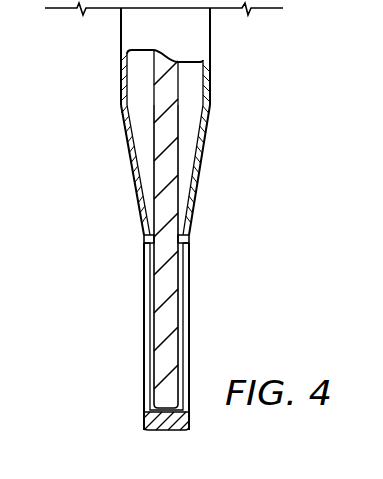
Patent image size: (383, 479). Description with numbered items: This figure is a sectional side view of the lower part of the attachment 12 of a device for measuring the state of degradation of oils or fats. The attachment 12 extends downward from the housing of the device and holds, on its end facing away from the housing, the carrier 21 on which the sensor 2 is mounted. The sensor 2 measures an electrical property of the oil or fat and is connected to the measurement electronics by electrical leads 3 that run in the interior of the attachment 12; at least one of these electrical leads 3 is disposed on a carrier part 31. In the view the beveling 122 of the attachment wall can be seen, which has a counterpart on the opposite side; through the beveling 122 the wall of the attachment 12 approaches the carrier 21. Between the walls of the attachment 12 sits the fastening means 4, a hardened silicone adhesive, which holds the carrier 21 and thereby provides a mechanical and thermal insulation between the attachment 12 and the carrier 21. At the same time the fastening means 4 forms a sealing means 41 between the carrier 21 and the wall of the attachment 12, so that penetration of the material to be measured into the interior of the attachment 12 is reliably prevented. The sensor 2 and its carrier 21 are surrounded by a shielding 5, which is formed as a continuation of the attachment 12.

The attachment 12 is at (211, 33).
The beveling 122 is at (226, 181).
The electrical leads 3 is at (209, 100).
The carrier part 31 is at (160, 132).
The carrier 21 is at (180, 306).
The fastening means 4 is at (144, 238).
The sealing means 41 is at (136, 252).
The sensor 2 is at (138, 365).
The shielding 5 is at (164, 430).